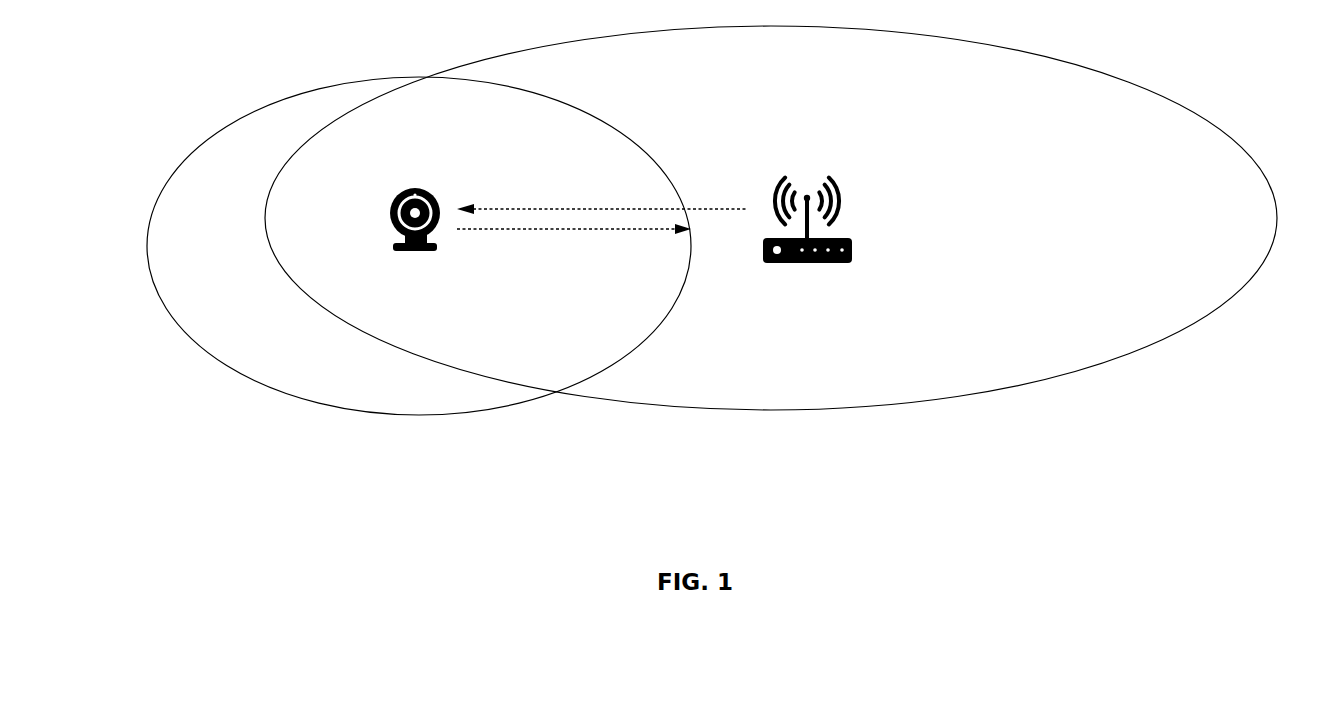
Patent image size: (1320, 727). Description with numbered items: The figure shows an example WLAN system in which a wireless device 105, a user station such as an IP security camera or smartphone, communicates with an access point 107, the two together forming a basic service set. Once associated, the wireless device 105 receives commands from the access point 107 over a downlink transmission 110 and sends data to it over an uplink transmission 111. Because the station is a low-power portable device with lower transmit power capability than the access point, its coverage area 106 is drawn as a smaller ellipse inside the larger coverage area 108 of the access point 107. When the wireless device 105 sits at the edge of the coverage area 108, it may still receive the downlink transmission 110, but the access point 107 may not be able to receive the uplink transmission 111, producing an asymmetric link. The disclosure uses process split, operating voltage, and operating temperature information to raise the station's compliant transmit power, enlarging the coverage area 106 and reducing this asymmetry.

The wireless device 105 is at (397, 244).
The coverage area of the STA 106 is at (207, 356).
The access point 107 is at (852, 258).
The coverage area of the AP 108 is at (1055, 376).
The downlink transmission 110 is at (588, 209).
The uplink transmission 111 is at (565, 229).